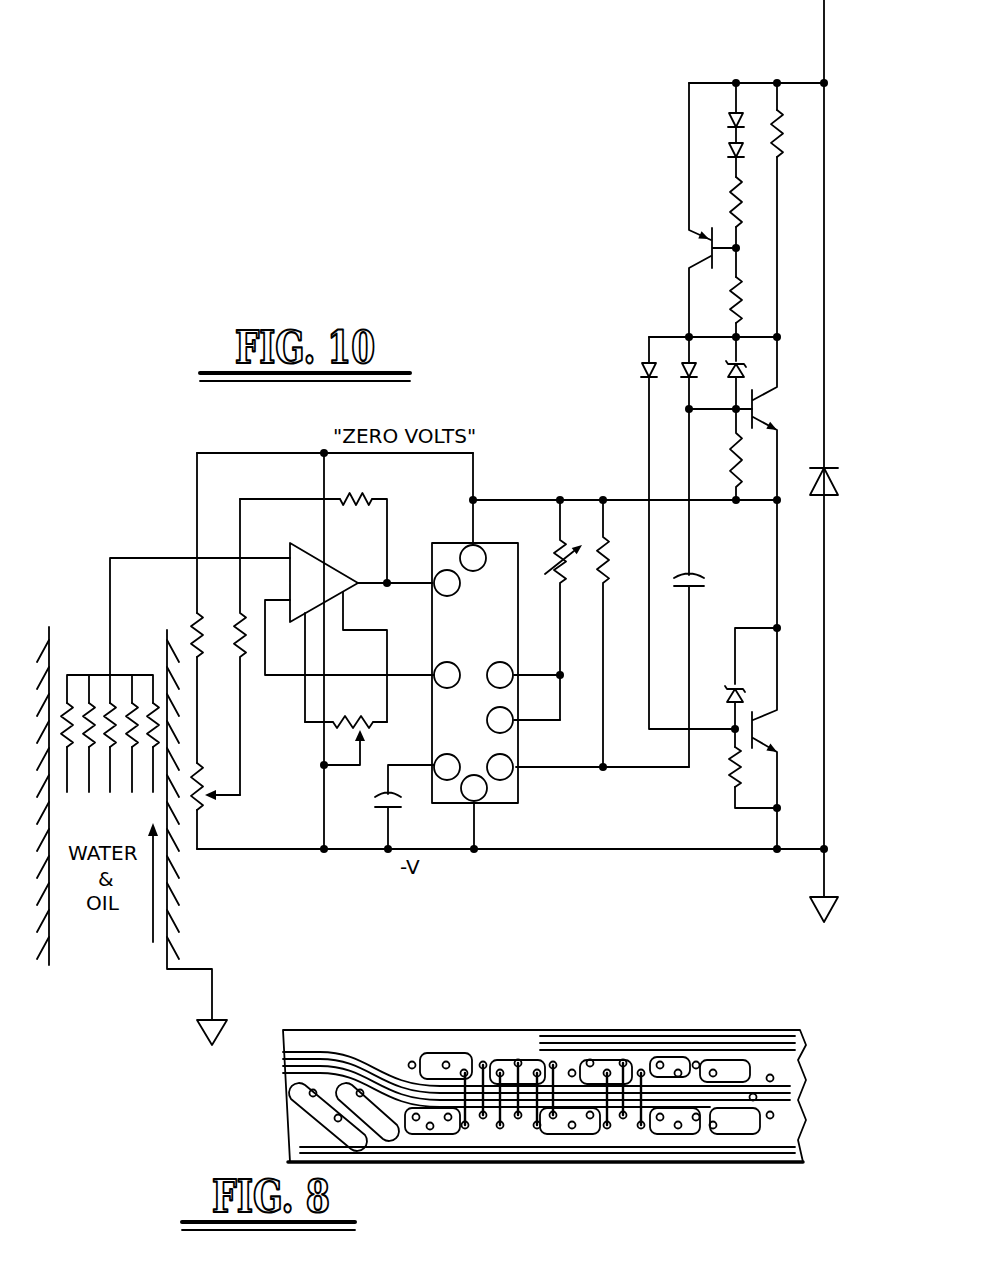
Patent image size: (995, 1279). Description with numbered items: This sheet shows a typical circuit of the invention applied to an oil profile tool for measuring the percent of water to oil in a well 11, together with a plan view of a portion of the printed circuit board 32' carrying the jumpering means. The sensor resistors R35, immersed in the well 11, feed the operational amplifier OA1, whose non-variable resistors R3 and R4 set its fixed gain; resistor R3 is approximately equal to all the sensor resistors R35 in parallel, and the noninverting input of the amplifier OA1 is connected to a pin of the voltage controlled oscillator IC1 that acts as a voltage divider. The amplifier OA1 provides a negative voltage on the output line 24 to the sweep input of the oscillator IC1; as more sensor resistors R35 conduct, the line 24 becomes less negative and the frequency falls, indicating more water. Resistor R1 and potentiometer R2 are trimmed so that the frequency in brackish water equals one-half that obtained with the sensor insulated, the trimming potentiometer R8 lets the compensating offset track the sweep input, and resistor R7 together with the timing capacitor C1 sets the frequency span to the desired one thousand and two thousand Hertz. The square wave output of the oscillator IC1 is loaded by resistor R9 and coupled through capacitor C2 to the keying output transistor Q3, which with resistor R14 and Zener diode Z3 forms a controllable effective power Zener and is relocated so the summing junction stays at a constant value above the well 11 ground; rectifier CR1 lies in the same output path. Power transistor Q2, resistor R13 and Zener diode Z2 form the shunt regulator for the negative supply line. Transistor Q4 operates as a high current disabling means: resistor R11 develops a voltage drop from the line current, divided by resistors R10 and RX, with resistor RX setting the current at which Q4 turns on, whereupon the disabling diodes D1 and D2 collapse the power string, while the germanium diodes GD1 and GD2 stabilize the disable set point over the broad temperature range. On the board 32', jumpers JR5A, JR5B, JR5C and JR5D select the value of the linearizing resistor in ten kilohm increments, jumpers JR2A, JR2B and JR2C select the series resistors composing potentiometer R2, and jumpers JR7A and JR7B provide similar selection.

In FIG. 10, the germanium diode GD1 is at (683, 133).
In FIG. 10, the germanium diode GD2 is at (692, 163).
In FIG. 10, the resistor R10 is at (755, 198).
In FIG. 10, the resistor R11 is at (799, 133).
In FIG. 10, the resistor RX is at (751, 300).
In FIG. 10, the transistor Q4 is at (702, 248).
In FIG. 10, the disabling diode D1 is at (676, 531).
In FIG. 10, the disabling diode D2 is at (704, 375).
In FIG. 10, the Zener diode Z3 is at (746, 368).
In FIG. 10, the output transistor Q3 is at (774, 418).
In FIG. 10, the resistor R14 is at (719, 454).
In FIG. 10, the controlled rectifier CR1 is at (846, 482).
In FIG. 10, the capacitor C2 is at (705, 588).
In FIG. 10, the resistor R9 is at (617, 633).
In FIG. 10, the resistor R7 is at (553, 610).
In FIG. 10, the Zener diode Z2 is at (745, 684).
In FIG. 10, the power transistor Q2 is at (774, 738).
In FIG. 10, the resistor R13 is at (717, 780).
In FIG. 10, the voltage controlled oscillator IC1 is at (475, 696).
In FIG. 10, the resistor R1 is at (186, 622).
In FIG. 10, the potentiometer R2 is at (215, 783).
In FIG. 10, the resistor R3 is at (227, 647).
In FIG. 10, the resistor R4 is at (313, 525).
In FIG. 10, the operational amplifier OA1 is at (361, 579).
In FIG. 10, the output line 24 is at (407, 578).
In FIG. 10, the potentiometer R8 is at (346, 726).
In FIG. 10, the timing capacitor C1 is at (392, 807).
In FIG. 10, the sensor resistor R35 is at (110, 717).
In FIG. 10, the well 11 is at (57, 648).
In FIG. 8, the printed circuit board 32' is at (544, 1074).
In FIG. 8, the jumper JR5B is at (518, 1060).
In FIG. 8, the jumper JR5C is at (537, 1070).
In FIG. 8, the jumper JR5D is at (553, 1062).
In FIG. 8, the jumper JR7A is at (465, 1125).
In FIG. 8, the jumper JR7B is at (483, 1115).
In FIG. 8, the jumper JR5A is at (500, 1125).
In FIG. 8, the jumper JR2A is at (607, 1125).
In FIG. 8, the jumper JR2B is at (623, 1115).
In FIG. 8, the jumper JR2C is at (641, 1125).